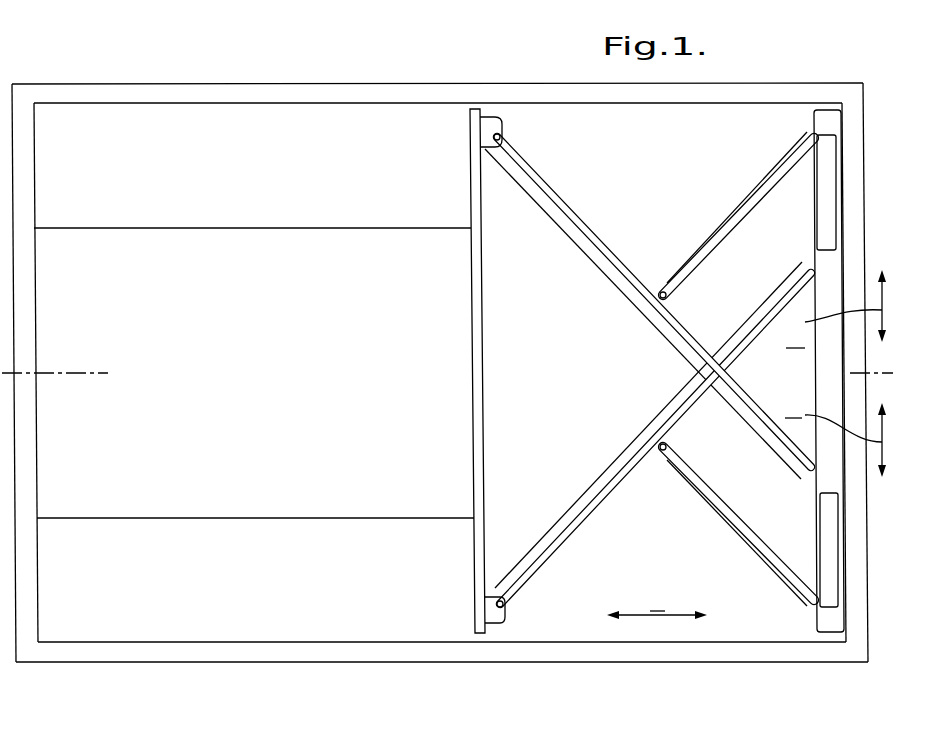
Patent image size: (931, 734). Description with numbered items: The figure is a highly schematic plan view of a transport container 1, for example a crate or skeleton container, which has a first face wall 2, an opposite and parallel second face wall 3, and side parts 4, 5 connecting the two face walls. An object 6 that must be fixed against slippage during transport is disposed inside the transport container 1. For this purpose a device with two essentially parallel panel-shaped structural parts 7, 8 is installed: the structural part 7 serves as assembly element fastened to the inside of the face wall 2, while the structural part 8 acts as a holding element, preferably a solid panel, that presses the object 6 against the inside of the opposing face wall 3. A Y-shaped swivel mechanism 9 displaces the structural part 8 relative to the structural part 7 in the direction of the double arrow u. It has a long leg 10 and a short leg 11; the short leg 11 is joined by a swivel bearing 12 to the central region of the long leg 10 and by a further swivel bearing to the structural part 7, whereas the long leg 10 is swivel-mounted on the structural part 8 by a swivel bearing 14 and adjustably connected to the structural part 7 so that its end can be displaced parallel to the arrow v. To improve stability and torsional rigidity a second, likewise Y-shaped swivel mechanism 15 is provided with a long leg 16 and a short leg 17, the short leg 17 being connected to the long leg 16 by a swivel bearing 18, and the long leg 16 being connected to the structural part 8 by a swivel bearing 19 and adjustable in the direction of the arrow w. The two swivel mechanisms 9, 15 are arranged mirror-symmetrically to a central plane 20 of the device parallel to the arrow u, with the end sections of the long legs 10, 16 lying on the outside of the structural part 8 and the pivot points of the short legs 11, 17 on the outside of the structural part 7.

The transport container 1 is at (73, 69).
The first face wall 2 is at (856, 108).
The second face wall 3 is at (27, 645).
The side part 4 is at (153, 648).
The side part 5 is at (216, 94).
The object 6 is at (142, 252).
The structural part 7 is at (808, 513).
The structural part 8 is at (459, 191).
The swivel mechanism 9 is at (621, 229).
The long leg 10 is at (548, 195).
The short leg 11 is at (793, 178).
The swivel bearing 12 is at (663, 290).
The swivel bearing 14 is at (494, 128).
The second swivel mechanism 15 is at (609, 521).
The long leg 16 is at (540, 560).
The short leg 17 is at (783, 558).
The swivel bearing 18 is at (661, 452).
The swivel bearing 19 is at (502, 620).
The central plane 20 is at (45, 372).